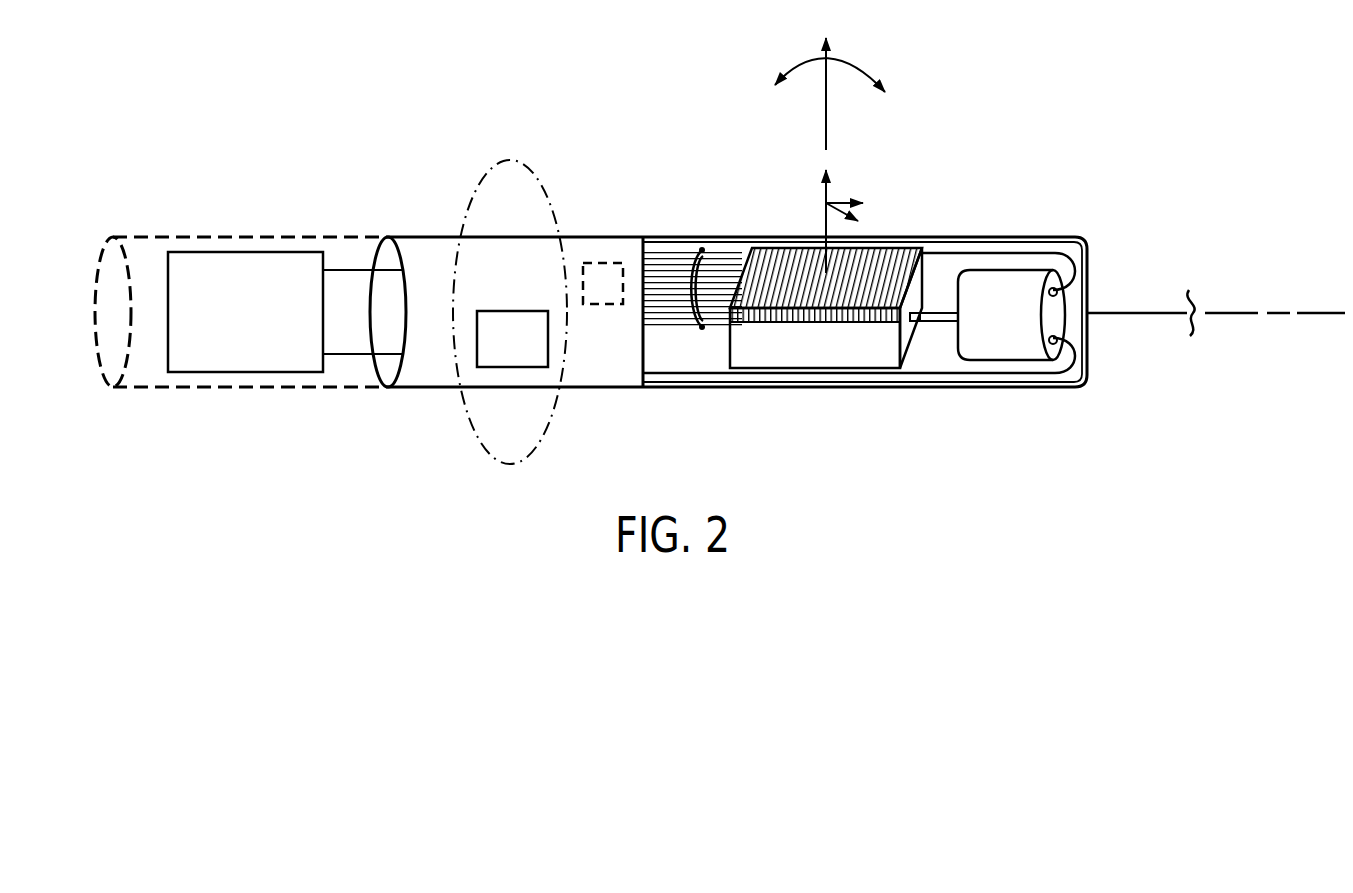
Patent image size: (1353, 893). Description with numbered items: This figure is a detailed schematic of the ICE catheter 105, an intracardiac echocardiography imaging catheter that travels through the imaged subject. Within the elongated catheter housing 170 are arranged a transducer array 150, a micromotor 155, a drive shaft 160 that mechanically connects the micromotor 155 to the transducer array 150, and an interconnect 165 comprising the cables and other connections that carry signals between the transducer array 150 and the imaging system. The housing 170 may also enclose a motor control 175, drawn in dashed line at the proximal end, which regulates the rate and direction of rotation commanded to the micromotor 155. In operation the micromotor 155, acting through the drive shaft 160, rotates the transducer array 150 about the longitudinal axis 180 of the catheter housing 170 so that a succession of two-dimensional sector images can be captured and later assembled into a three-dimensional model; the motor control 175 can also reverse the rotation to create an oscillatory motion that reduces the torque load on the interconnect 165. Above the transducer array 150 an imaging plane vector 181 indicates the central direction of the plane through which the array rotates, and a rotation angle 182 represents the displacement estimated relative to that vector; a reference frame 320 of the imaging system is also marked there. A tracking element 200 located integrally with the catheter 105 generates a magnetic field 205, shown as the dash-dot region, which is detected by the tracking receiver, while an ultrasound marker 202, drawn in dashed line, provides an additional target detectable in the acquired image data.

The ICE catheter 105 is at (1080, 83).
The transducer array 150 is at (795, 322).
The micromotor 155 is at (998, 348).
The drive shaft 160 is at (928, 325).
The interconnect 165 is at (665, 318).
The catheter housing 170 is at (630, 222).
The motor control 175 is at (236, 387).
The longitudinal axis 180 is at (1238, 313).
The imaging plane vector 181 is at (826, 107).
The rotation angle 182 is at (850, 60).
The tracking element 200 is at (548, 338).
The ultrasound marker 202 is at (605, 262).
The magnetic field 205 is at (475, 438).
The reference frame 320 is at (826, 215).